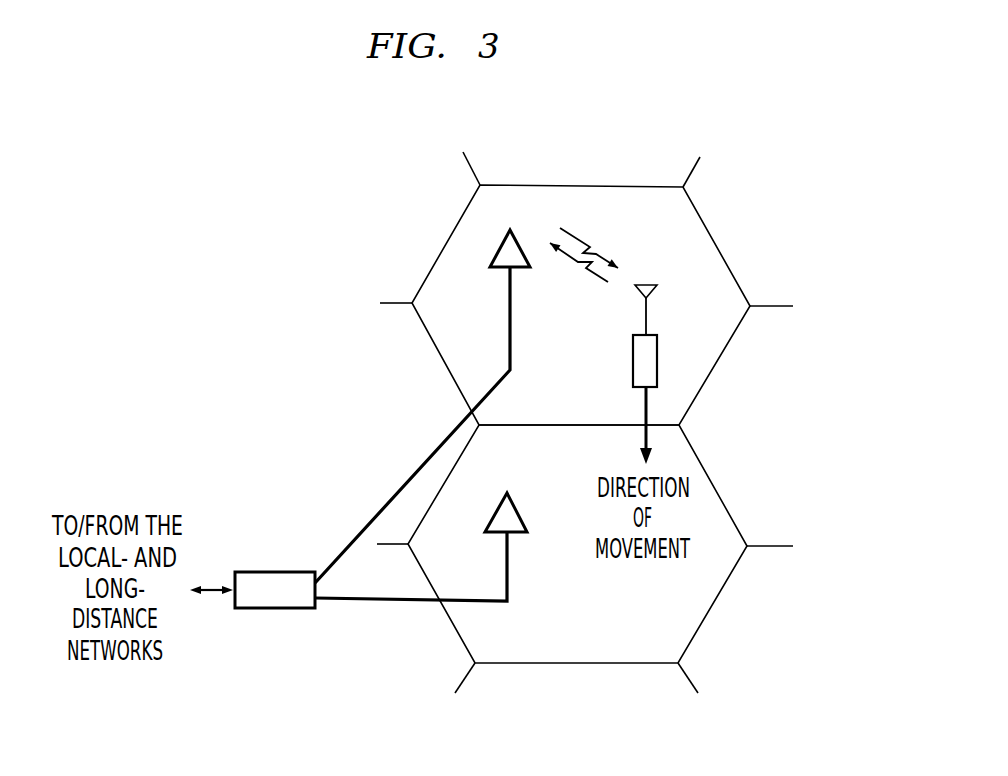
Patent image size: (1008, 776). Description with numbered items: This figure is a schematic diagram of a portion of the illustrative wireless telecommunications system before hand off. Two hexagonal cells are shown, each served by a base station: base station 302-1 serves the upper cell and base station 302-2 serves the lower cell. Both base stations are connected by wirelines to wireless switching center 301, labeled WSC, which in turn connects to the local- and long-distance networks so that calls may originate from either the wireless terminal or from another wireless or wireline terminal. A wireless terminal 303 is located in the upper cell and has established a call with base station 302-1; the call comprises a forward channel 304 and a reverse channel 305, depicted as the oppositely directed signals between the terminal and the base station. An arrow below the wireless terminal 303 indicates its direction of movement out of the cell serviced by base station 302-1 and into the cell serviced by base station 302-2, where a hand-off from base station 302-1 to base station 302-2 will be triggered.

The wireless switching center 301 is at (273, 610).
The base station 302-1 is at (508, 294).
The base station 302-2 is at (507, 557).
The wireless terminal 303 is at (657, 360).
The forward channel 304 is at (580, 238).
The reverse channel 305 is at (587, 273).